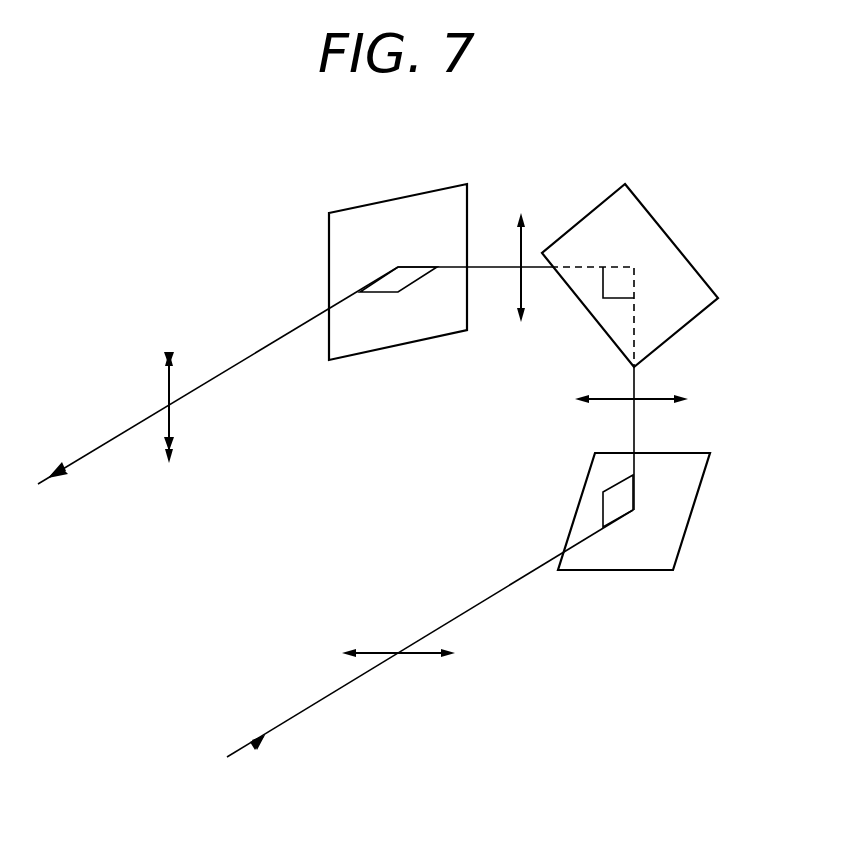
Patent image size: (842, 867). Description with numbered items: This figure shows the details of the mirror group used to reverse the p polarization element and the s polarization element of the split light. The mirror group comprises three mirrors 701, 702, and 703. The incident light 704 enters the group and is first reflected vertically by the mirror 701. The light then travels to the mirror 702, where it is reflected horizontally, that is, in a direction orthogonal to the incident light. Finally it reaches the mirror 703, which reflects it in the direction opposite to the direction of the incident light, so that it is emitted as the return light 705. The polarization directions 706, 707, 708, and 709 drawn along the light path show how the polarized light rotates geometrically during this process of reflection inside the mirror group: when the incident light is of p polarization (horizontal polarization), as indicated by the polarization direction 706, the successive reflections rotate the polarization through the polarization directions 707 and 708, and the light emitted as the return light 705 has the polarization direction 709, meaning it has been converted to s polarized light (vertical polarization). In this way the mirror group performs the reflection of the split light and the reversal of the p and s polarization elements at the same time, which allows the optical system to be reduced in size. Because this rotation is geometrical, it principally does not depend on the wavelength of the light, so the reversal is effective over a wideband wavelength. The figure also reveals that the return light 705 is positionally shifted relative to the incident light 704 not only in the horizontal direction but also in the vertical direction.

The mirror 701 is at (668, 522).
The mirror 702 is at (667, 248).
The mirror 703 is at (338, 252).
The incident light 704 is at (282, 723).
The return light 705 is at (72, 466).
The polarization direction 706 is at (382, 650).
The polarization direction 707 is at (650, 395).
The polarization direction 708 is at (518, 292).
The polarization direction 709 is at (172, 427).